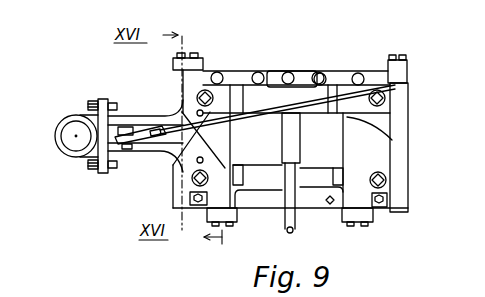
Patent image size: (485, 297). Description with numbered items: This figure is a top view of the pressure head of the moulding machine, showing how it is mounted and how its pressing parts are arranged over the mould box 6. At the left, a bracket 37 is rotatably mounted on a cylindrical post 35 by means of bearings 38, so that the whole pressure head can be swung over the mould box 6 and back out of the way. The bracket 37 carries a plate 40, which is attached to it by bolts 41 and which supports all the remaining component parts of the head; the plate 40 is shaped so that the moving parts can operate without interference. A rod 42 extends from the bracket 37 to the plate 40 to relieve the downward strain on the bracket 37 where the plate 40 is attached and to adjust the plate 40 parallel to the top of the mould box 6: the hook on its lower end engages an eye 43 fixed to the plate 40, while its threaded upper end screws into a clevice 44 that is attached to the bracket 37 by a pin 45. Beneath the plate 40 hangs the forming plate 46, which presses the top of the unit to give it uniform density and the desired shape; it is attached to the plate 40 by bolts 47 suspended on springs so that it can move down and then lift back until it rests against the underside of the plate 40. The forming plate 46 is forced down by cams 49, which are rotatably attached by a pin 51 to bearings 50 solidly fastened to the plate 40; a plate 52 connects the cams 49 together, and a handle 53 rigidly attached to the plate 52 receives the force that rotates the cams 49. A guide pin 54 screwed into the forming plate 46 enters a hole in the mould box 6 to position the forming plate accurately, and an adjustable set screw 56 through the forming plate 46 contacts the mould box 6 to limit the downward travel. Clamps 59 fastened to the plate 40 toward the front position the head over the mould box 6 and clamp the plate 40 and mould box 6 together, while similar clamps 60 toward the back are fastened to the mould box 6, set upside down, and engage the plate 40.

The mould box 6 is at (409, 206).
The cylindrical post 35 is at (68, 152).
The bracket 37 is at (132, 158).
The bearings 38 is at (57, 146).
The plate 40 is at (406, 133).
The bolts 41 is at (186, 158).
The rod 42 is at (371, 72).
The eye 43 is at (404, 88).
The clevice 44 is at (148, 128).
The pin 45 is at (128, 130).
The forming plate 46 is at (302, 208).
The bolts 47 is at (206, 90).
The cams 49 is at (306, 196).
The bearings 50 is at (334, 72).
The pin 51 is at (242, 88).
The plate 52 is at (345, 154).
The handle 53 is at (290, 234).
The guide pin 54 is at (253, 210).
The set screw 56 is at (298, 74).
The clamp 59 is at (175, 212).
The clamps 60 is at (176, 58).